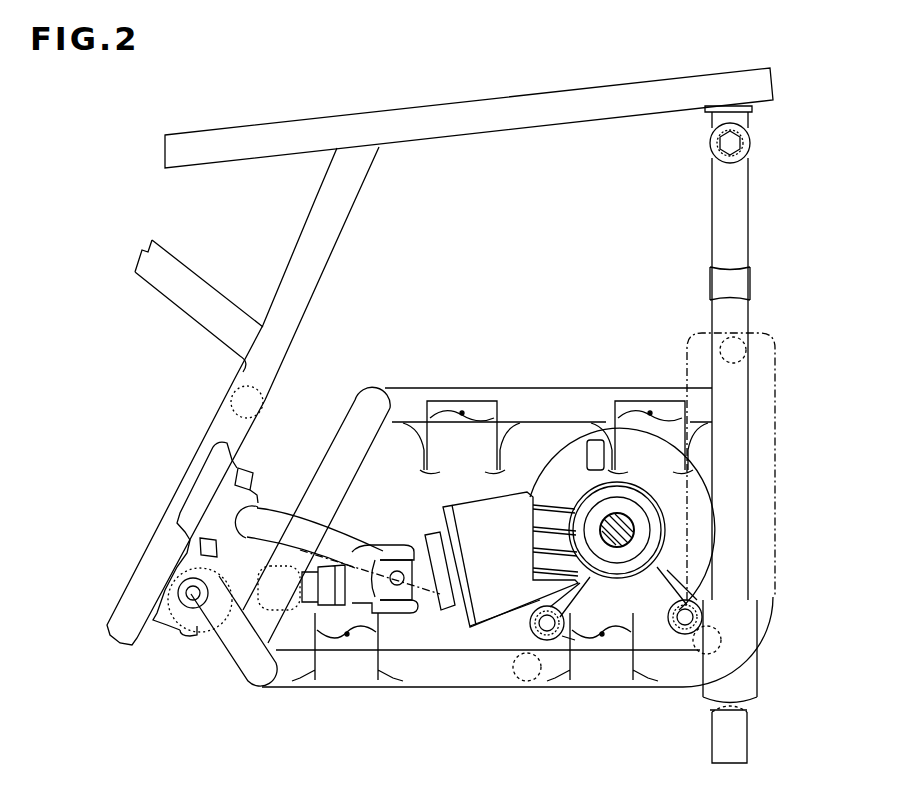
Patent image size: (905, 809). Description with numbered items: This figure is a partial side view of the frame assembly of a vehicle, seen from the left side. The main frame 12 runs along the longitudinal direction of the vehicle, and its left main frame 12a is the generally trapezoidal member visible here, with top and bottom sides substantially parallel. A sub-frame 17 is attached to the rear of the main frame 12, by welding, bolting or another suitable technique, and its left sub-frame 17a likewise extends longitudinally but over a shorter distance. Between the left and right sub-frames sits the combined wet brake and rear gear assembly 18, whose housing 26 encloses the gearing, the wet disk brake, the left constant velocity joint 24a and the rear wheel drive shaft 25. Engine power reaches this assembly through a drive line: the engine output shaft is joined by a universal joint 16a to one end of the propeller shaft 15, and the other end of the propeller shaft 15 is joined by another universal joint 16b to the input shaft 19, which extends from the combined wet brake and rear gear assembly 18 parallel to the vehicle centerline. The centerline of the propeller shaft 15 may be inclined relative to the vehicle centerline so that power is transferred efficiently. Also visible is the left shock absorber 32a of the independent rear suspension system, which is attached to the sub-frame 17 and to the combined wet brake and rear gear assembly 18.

The main frame 12 is at (343, 137).
The left main frame 12a is at (170, 290).
The propeller shaft 15 is at (302, 603).
The universal joint 16a is at (187, 613).
The universal joint 16b is at (402, 612).
The sub-frame 17 is at (742, 215).
The left sub-frame 17a is at (735, 557).
The combined wet brake and rear gear assembly 18 is at (677, 478).
The input shaft 19 is at (452, 612).
The left constant velocity joint 24a is at (647, 530).
The rear wheel drive shaft 25 is at (617, 535).
The housing 26 is at (700, 490).
The left shock absorber 32a is at (762, 378).